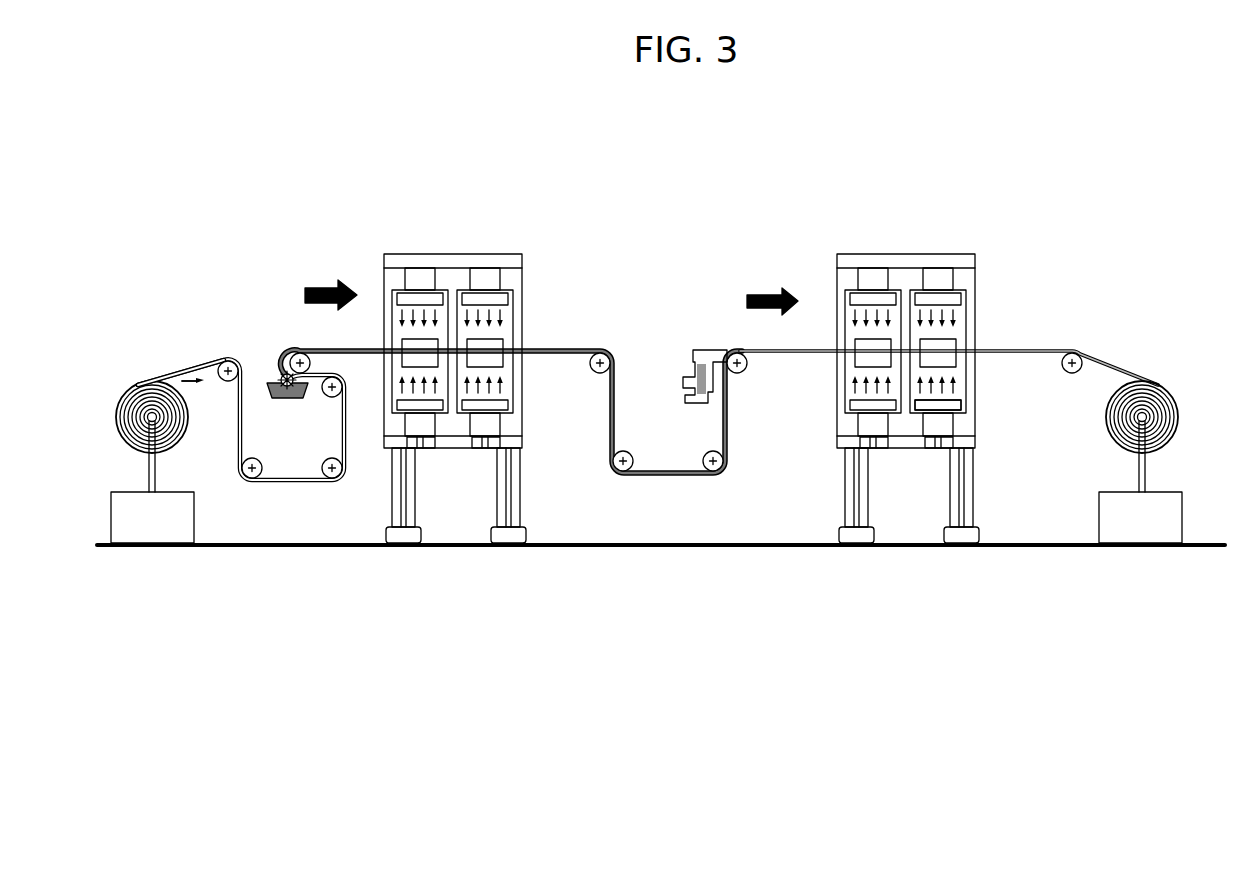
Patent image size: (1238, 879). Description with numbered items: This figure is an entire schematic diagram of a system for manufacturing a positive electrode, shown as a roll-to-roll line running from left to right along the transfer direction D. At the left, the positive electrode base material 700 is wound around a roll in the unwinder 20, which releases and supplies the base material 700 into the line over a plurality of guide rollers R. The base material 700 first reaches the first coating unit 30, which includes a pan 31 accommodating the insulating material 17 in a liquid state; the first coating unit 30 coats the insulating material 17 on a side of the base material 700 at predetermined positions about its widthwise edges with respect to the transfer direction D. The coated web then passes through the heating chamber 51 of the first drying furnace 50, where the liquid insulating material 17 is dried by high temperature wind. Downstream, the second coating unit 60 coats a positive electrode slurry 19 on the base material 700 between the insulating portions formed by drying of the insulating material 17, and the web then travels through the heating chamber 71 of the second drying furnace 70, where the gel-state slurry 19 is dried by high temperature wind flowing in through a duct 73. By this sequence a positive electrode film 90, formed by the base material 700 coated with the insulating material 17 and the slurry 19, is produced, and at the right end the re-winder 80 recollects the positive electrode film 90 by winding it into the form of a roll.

The insulating material 17 is at (272, 384).
The positive electrode slurry 19 is at (693, 404).
The unwinder 20 is at (106, 388).
The first coating unit 30 is at (279, 451).
The pan 31 is at (301, 399).
The first drying furnace 50 is at (485, 365).
The heating chamber 51 is at (522, 300).
The second coating unit 60 is at (691, 441).
The second drying furnace 70 is at (937, 365).
The heating chamber 71 is at (976, 282).
The duct 73 is at (958, 404).
The re-winder 80 is at (1188, 370).
The positive electrode film 90 is at (1104, 360).
The positive electrode base material 700 is at (172, 378).
The roller R is at (253, 479).
The transfer direction D is at (195, 396).